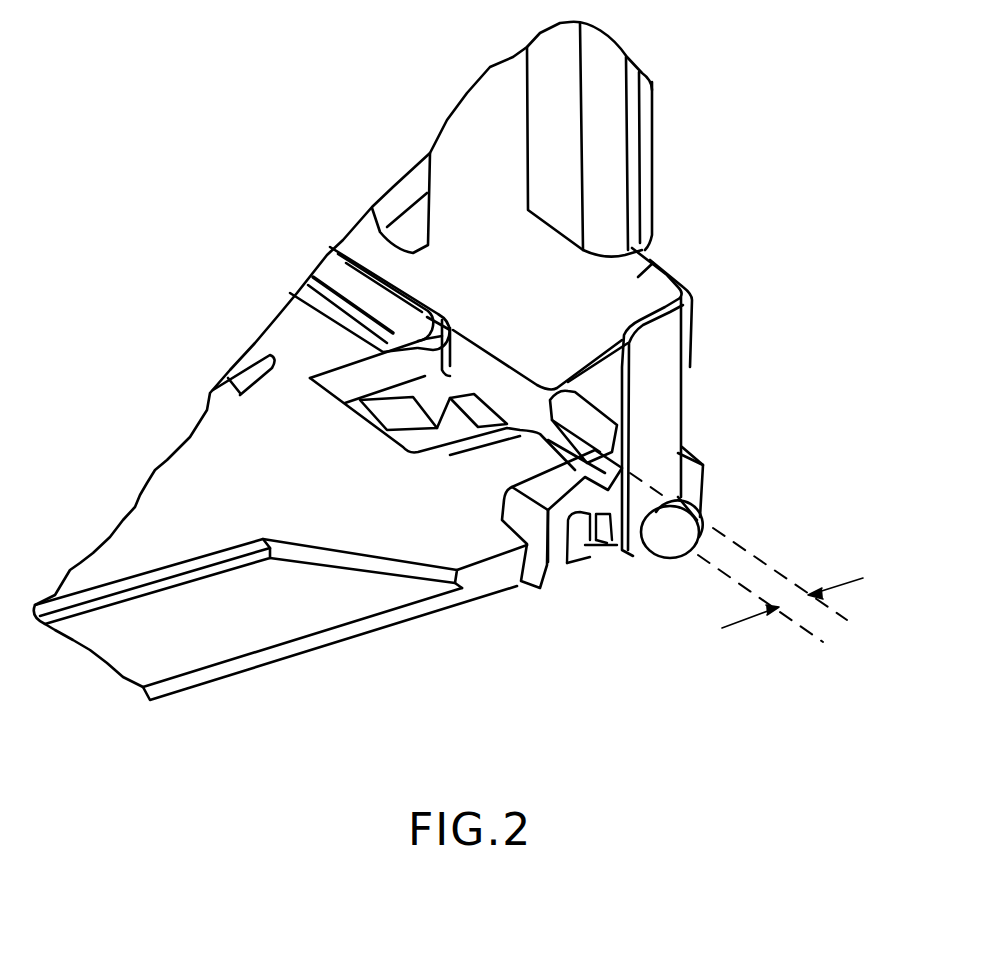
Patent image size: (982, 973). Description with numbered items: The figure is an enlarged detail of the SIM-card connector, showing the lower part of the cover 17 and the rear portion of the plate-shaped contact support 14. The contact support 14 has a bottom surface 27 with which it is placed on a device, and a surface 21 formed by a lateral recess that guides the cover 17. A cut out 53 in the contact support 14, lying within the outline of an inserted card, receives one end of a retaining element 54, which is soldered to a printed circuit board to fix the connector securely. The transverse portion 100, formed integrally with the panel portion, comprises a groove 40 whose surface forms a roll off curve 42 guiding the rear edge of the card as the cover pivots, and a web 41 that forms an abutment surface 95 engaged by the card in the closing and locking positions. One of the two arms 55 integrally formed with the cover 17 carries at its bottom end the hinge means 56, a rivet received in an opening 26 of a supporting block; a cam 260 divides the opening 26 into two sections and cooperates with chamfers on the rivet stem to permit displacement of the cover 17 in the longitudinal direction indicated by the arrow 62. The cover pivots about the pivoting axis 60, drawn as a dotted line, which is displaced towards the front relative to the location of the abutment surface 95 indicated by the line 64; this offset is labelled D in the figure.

The contact support 14 is at (290, 662).
The surface 21 is at (337, 610).
The cover 17 is at (653, 252).
The arm 55 is at (663, 392).
The hinge means 56 is at (700, 560).
The opening 26 is at (596, 556).
The longitudinal direction 62 is at (555, 584).
The cam 260 is at (607, 545).
The pivoting axis 60 is at (793, 626).
The line 64 is at (772, 566).
The distance D is at (803, 603).
The web 41 is at (328, 247).
The roll off curve 42 is at (387, 305).
The groove 40 is at (422, 302).
The abutment surface 95 is at (333, 318).
The transverse portion 100 is at (461, 349).
The cut out 53 is at (420, 370).
The bottom surface 27 is at (408, 378).
The retaining element 54 is at (425, 405).